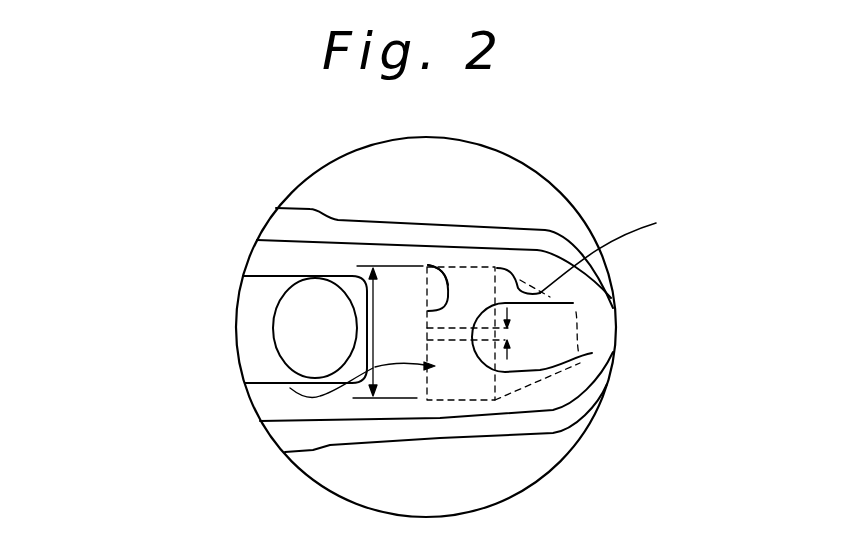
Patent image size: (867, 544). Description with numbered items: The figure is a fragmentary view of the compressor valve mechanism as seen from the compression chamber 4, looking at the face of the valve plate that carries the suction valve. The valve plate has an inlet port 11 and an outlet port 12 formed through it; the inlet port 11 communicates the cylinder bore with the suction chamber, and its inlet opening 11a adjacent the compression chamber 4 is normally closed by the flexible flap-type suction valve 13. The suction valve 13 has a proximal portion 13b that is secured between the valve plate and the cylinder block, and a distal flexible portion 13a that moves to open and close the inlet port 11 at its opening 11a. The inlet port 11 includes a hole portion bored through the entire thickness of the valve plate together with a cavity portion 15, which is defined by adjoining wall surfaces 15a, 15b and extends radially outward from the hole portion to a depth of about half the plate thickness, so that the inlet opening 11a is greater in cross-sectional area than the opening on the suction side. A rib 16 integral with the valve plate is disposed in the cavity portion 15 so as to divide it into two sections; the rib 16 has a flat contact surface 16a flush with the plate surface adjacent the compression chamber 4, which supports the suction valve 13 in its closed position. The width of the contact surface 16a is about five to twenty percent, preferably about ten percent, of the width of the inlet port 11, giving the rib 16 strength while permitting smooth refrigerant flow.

The compression chamber 4 is at (490, 184).
The inlet port 11 is at (566, 279).
The inlet opening 11a is at (565, 338).
The outlet port 12 is at (280, 300).
The suction valve 13 is at (612, 250).
The distal flexible portion 13a is at (537, 394).
The proximal portion 13b is at (274, 408).
The cavity portion 15 is at (290, 388).
The wall surface 15a is at (453, 276).
The wall surface 15b is at (428, 265).
The rib 16 is at (592, 353).
The contact surface 16a is at (568, 303).